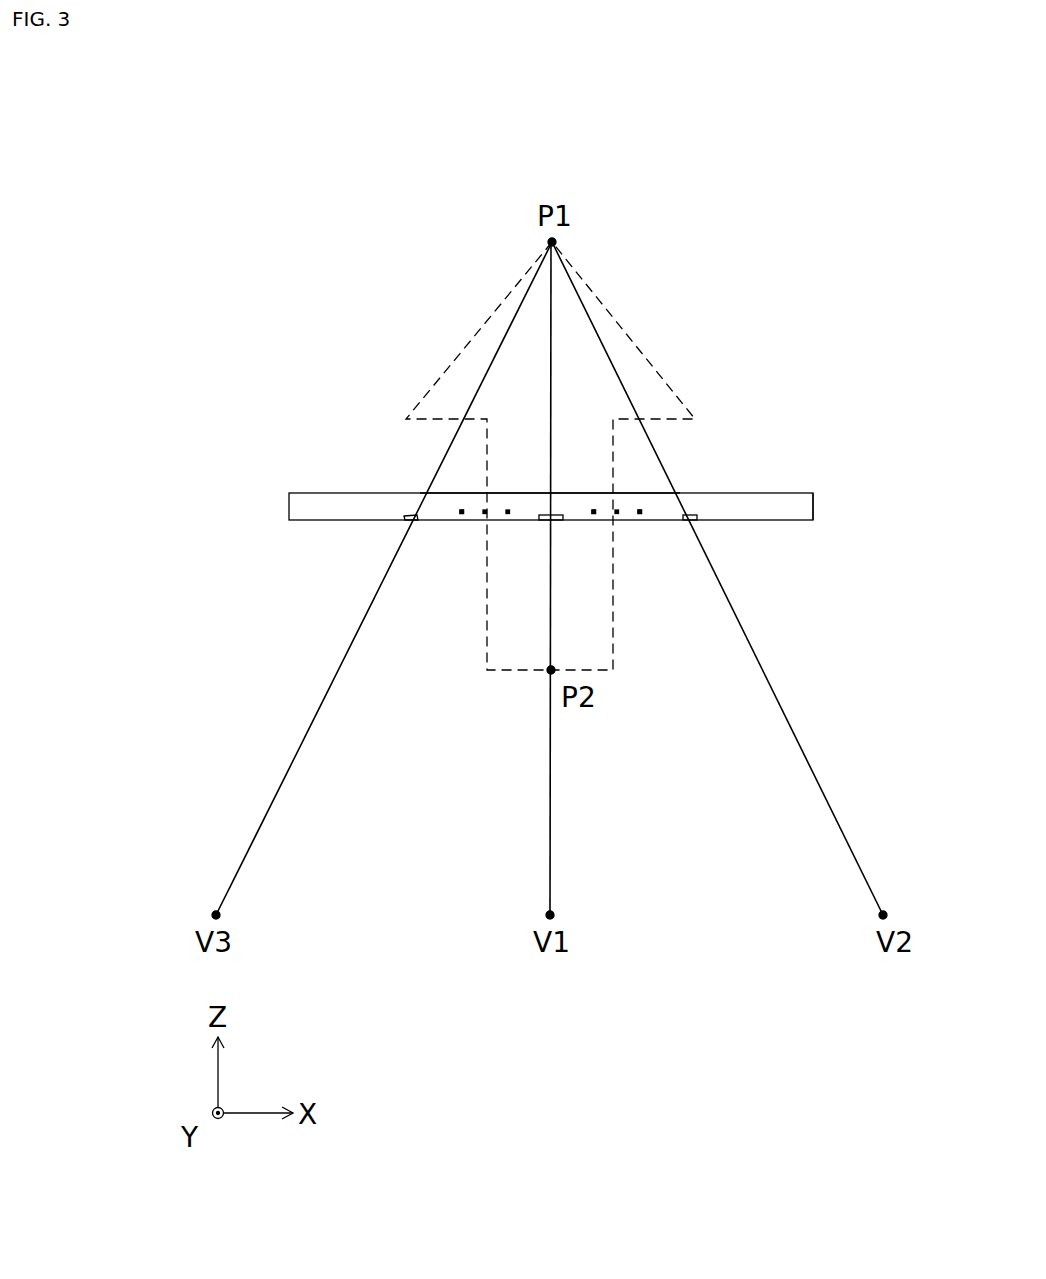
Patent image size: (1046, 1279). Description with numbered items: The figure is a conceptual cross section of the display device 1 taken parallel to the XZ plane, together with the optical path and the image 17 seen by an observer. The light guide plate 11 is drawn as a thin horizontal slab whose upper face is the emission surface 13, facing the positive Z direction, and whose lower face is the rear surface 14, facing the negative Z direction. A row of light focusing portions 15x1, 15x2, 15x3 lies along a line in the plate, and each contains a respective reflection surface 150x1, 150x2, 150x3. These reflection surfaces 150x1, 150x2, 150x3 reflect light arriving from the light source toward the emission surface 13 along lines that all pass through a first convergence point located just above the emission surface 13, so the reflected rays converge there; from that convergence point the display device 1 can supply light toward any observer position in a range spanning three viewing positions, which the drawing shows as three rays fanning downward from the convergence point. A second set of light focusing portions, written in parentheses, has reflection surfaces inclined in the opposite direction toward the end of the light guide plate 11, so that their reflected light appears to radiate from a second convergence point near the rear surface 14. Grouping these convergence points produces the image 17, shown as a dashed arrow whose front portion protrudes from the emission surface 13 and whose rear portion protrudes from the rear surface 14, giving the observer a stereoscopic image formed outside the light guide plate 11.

The display device 1 is at (831, 337).
The light guide plate 11 is at (301, 507).
The emission surface 13 is at (392, 497).
The rear surface 14 is at (808, 517).
The image 17 is at (623, 330).
The light focusing portion 15x1 is at (548, 522).
The light focusing portion 15x2 is at (405, 521).
The light focusing portion 15x3 is at (690, 521).
The reflection surface 150x1 is at (565, 515).
The reflection surface 150x2 is at (420, 518).
The reflection surface 150x3 is at (690, 517).